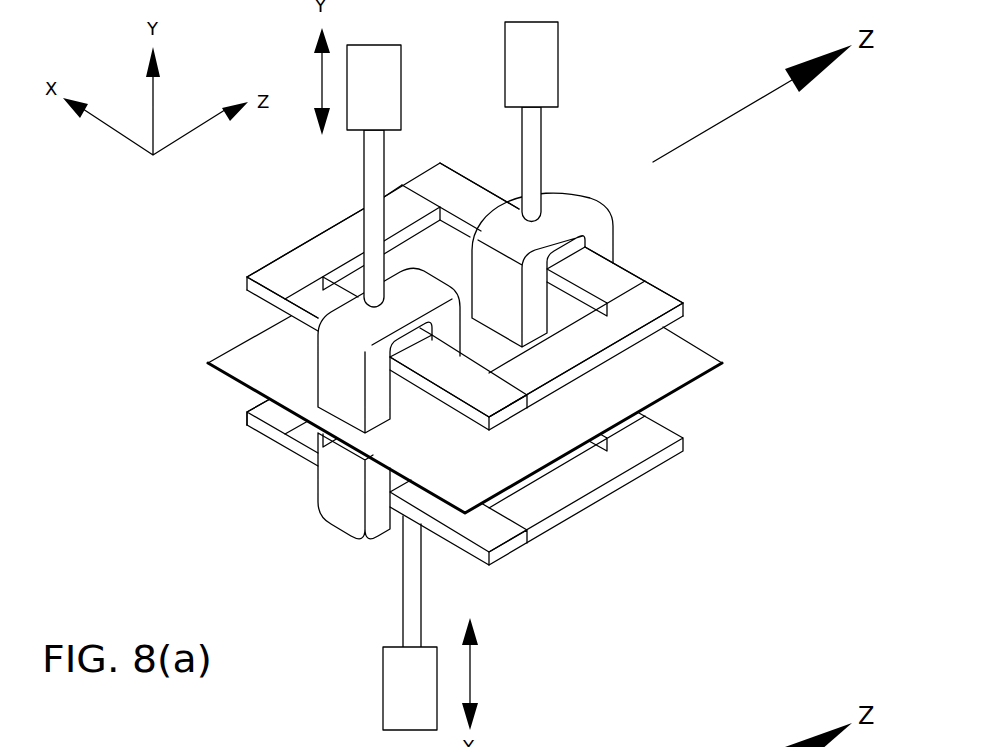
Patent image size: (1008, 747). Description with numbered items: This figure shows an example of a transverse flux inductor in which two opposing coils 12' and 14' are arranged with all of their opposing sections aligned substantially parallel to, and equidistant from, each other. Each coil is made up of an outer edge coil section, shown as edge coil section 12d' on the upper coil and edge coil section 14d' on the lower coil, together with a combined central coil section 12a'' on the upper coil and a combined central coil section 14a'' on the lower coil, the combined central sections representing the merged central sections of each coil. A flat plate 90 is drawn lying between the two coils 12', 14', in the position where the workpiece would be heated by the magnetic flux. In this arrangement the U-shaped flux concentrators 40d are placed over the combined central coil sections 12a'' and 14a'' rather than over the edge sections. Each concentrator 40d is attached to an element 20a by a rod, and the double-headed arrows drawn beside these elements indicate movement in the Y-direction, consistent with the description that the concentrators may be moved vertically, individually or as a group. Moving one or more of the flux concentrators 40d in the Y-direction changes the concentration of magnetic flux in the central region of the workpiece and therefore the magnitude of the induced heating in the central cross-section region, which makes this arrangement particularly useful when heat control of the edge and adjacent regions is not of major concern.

The actuator 20a is at (382, 98).
The "U" shaped flux concentrator 40d is at (561, 204).
The coil 12' is at (544, 290).
The edge coil section 12d' is at (542, 307).
The combined central coil section 12a'' is at (431, 296).
The coil 14' is at (544, 482).
The combined central coil section 14a'' is at (263, 438).
The edge coil section 14d' is at (451, 526).
The intermediate plate 90 is at (454, 461).